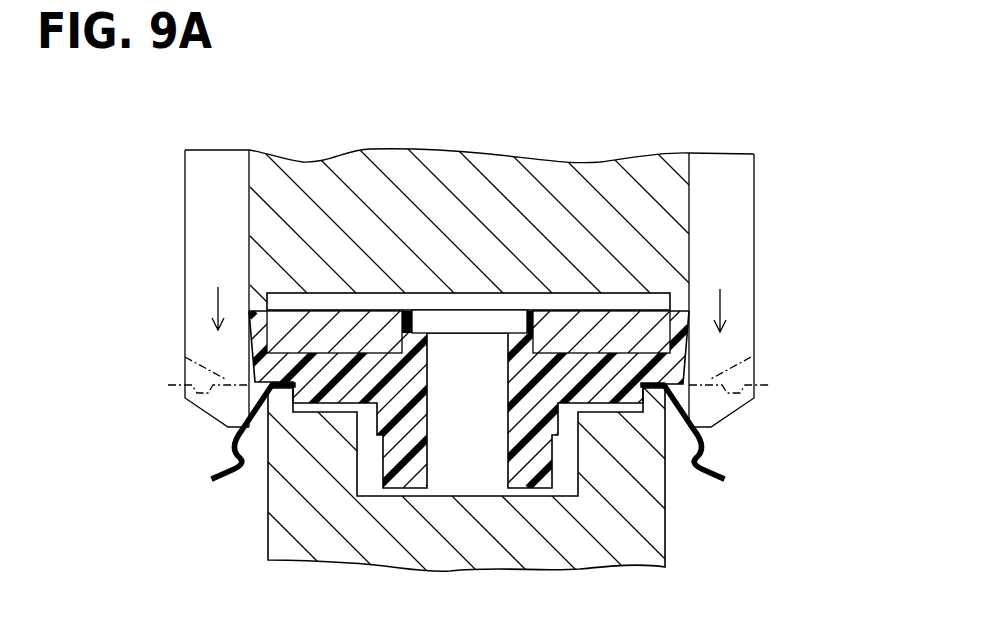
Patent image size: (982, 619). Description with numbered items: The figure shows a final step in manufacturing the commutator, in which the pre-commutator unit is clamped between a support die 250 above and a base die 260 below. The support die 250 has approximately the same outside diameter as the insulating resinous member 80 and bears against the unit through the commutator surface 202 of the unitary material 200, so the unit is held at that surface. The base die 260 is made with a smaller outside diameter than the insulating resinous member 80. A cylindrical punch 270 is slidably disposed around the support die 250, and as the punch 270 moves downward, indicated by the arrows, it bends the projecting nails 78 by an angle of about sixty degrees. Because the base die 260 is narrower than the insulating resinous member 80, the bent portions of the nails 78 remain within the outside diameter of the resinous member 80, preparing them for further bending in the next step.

The nails 78 is at (215, 462).
The insulating resinous member 80 is at (388, 460).
The unitary material 200 is at (636, 307).
The commutator surface 202 is at (347, 311).
The support die 250 is at (607, 180).
The base die 260 is at (650, 523).
The cylindrical punch 270 is at (738, 197).